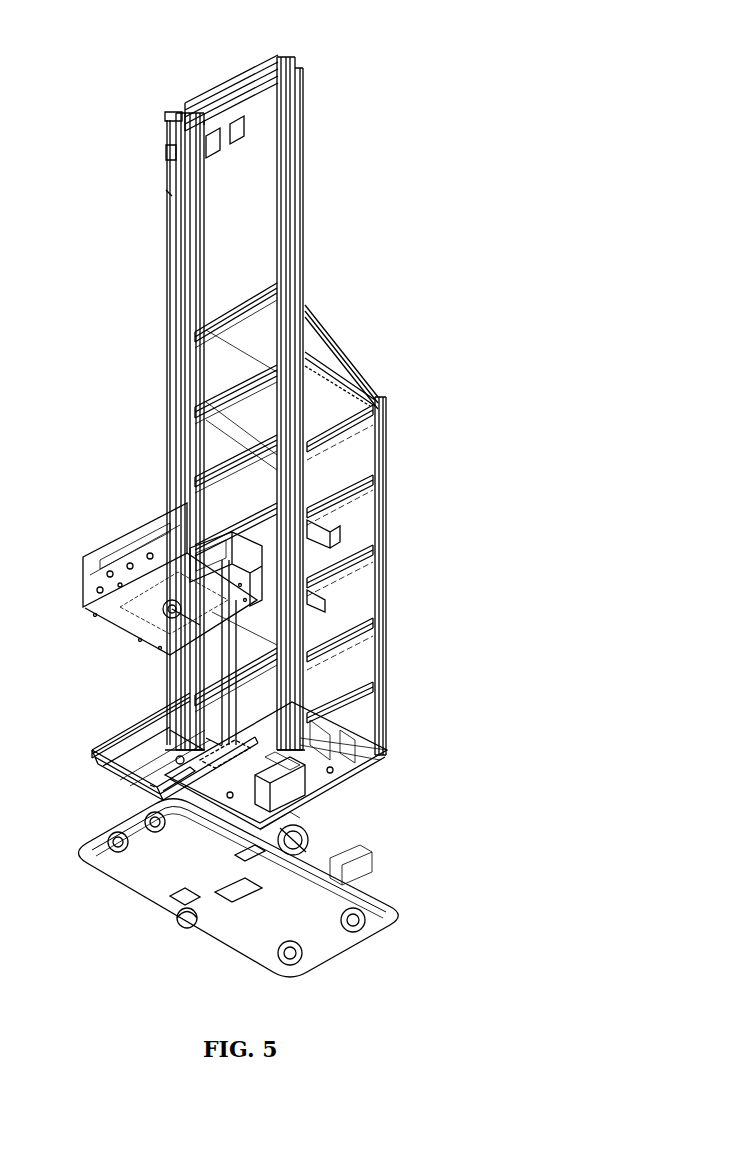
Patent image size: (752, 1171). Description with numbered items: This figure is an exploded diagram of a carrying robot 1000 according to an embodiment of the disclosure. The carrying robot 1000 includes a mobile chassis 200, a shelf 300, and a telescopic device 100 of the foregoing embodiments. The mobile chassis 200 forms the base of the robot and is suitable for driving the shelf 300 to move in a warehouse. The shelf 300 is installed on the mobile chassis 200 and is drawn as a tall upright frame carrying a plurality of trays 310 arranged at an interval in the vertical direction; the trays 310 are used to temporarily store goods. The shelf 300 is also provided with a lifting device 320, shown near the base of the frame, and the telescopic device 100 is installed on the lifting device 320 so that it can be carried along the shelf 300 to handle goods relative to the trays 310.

The carrying robot 1000 is at (240, 30).
The telescopic device 100 is at (118, 540).
The mobile chassis 200 is at (330, 943).
The shelf 300 is at (377, 470).
The tray 310 is at (330, 556).
The lifting device 320 is at (100, 770).